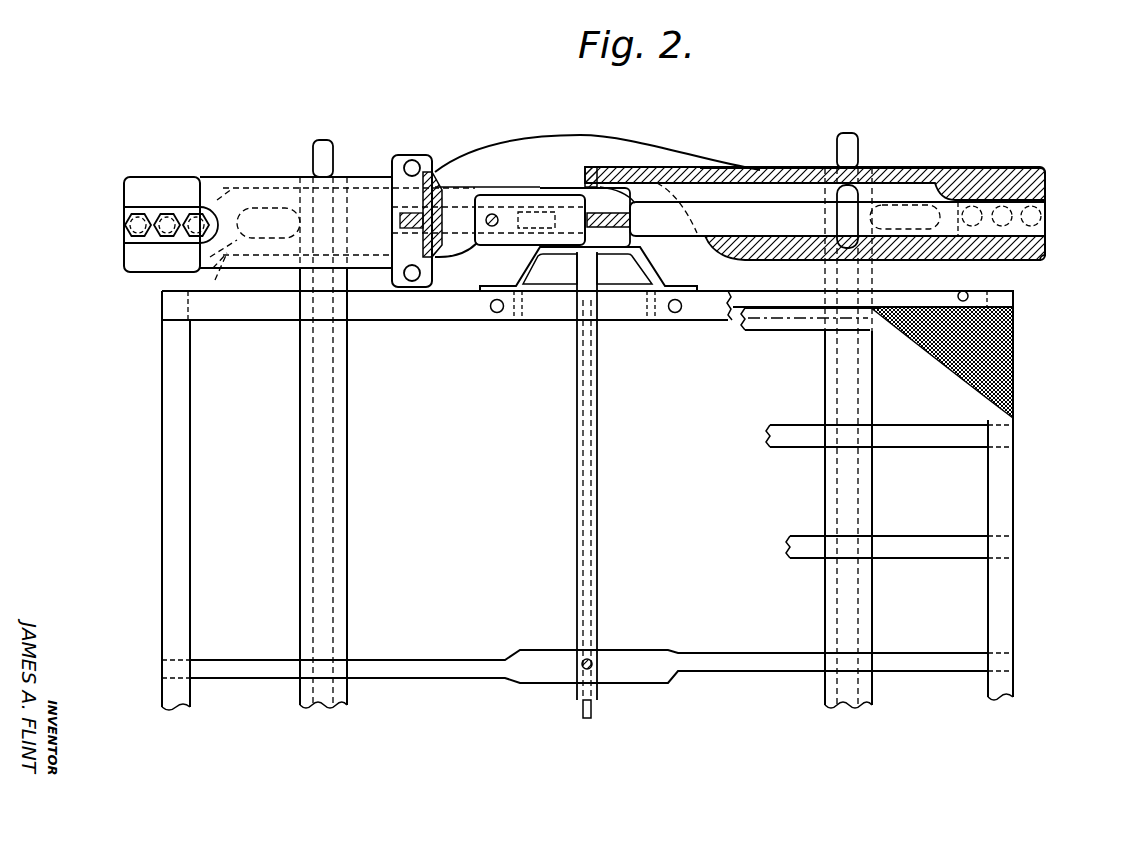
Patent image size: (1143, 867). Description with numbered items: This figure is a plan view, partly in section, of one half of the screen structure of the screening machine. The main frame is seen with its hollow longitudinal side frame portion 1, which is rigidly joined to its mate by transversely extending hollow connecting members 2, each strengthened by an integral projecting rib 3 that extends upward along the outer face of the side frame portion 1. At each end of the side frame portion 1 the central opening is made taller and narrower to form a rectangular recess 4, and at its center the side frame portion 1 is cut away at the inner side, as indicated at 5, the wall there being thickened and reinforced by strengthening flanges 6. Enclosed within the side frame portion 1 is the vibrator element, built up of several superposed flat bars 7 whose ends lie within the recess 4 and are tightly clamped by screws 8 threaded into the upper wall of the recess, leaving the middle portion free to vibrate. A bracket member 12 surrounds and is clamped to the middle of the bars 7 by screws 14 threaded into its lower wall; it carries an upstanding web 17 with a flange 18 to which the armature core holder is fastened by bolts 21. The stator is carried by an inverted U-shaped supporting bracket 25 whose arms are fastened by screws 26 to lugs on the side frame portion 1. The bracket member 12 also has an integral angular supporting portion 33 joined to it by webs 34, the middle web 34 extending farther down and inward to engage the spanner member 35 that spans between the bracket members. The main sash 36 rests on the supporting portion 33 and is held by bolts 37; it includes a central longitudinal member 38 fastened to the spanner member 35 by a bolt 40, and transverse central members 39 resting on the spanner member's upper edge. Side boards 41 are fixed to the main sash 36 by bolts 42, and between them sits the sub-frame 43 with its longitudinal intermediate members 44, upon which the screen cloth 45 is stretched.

The side frame portion 1 is at (251, 196).
The connecting member 2 is at (323, 428).
The rib 3 is at (321, 148).
The rectangular recess 4 is at (1040, 190).
The cut-away portion 5 is at (720, 168).
The strengthening flange 6 is at (642, 150).
The bar 7 is at (1068, 216).
The screw 8 is at (168, 232).
The bracket member 12 is at (597, 193).
The screw 14 is at (572, 187).
The web 17 is at (676, 198).
The flange 18 is at (508, 210).
The bolt 21 is at (492, 227).
The supporting bracket 25 is at (438, 170).
The screw 26 is at (412, 160).
The supporting portion 33 is at (562, 292).
The web 34 is at (647, 273).
The spanner member 35 is at (598, 428).
The main sash 36 is at (408, 315).
The bolt 37 is at (492, 313).
The central longitudinal member 38 is at (685, 662).
The transverse central member 39 is at (598, 562).
The bolt 40 is at (590, 668).
The side board 41 is at (900, 297).
The bolt 42 is at (966, 291).
The sub-frame 43 is at (775, 325).
The intermediate member 44 is at (950, 548).
The screen cloth 45 is at (1013, 355).